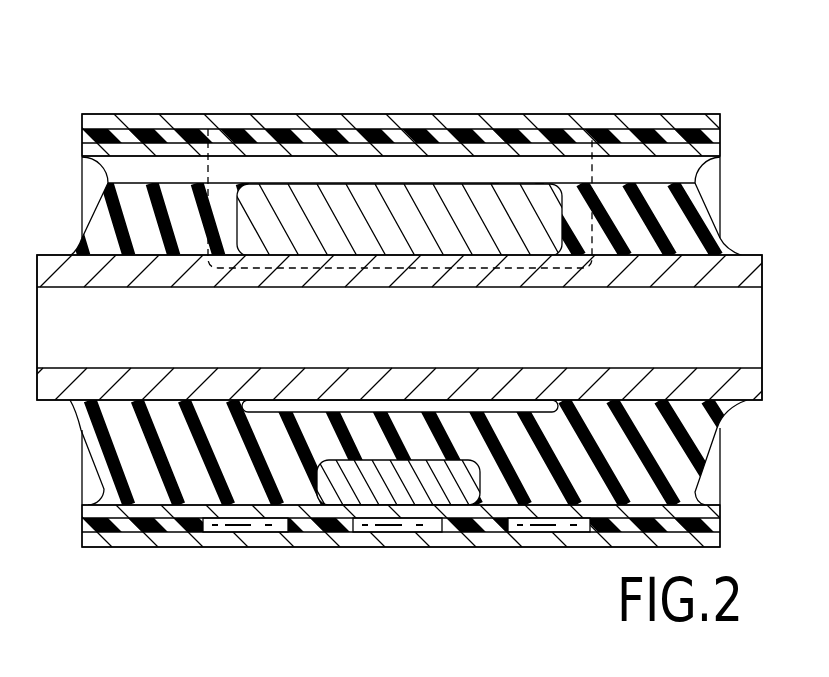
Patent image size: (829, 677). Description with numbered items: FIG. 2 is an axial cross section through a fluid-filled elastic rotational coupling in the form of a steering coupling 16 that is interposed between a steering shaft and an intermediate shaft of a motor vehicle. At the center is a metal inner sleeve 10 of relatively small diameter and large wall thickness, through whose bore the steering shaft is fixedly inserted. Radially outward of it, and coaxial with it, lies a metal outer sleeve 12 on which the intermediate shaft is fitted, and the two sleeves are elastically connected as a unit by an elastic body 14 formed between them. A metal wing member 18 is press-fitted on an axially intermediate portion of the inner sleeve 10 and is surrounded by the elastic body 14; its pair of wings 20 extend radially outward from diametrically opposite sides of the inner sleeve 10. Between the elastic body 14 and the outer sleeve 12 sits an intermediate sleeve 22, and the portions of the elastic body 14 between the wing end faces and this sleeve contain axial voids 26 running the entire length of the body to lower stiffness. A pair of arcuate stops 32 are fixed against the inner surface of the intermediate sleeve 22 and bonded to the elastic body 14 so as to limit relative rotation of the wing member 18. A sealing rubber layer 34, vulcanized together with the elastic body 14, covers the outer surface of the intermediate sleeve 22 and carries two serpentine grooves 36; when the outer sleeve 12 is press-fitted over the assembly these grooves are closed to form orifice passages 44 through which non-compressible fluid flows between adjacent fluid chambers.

The inner sleeve 10 is at (745, 268).
The outer sleeve 12 is at (398, 151).
The elastic body 14 is at (147, 432).
The steering coupling 16 is at (222, 100).
The wing member 18 is at (525, 422).
The wings 20 is at (340, 195).
The intermediate sleeve 22 is at (398, 509).
The voids 26 is at (542, 168).
The arcuate stops 32 is at (370, 485).
The sealing rubber layer 34 is at (467, 135).
The serpentine grooves 36 is at (428, 523).
The orifice passages 44 is at (252, 525).